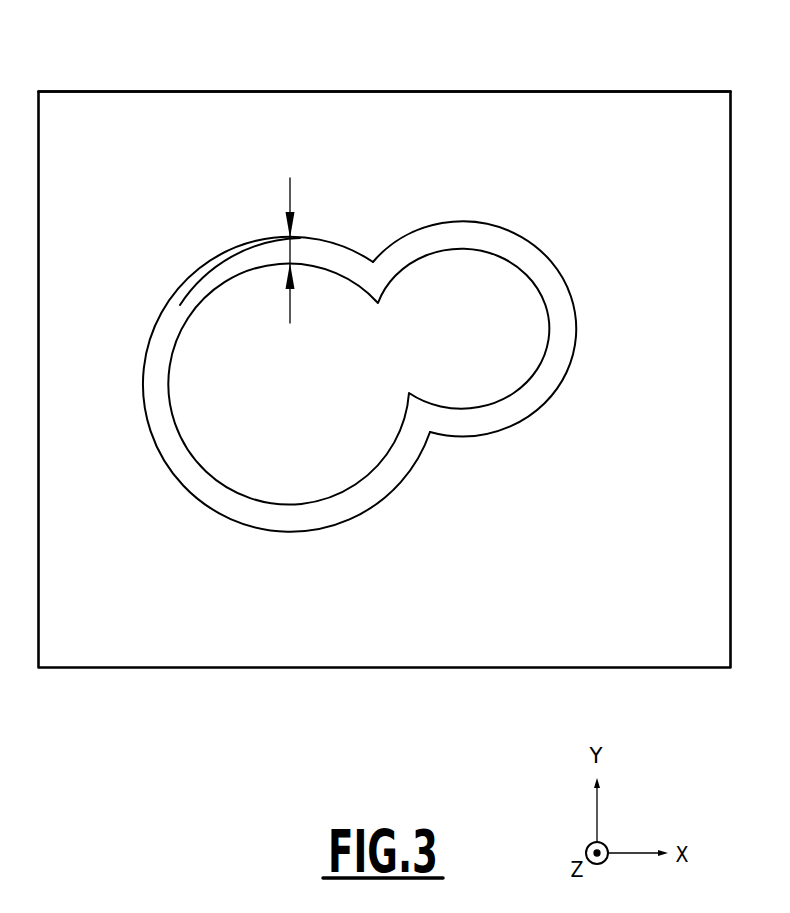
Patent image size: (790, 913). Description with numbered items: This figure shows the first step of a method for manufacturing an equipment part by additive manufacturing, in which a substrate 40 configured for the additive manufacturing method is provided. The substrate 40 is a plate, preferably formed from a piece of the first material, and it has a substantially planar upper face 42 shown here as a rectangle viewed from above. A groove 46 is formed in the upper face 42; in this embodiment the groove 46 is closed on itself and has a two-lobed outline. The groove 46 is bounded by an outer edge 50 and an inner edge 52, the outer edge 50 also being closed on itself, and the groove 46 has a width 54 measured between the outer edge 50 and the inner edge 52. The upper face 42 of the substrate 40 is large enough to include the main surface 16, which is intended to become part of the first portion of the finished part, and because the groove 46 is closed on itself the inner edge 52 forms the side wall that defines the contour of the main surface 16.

The main surface 16 is at (306, 479).
The substrate 40 is at (121, 684).
The upper face 42 is at (548, 118).
The groove 46 is at (526, 259).
The outer edge 50 is at (172, 297).
The inner edge 52 is at (219, 285).
The width 54 is at (288, 252).